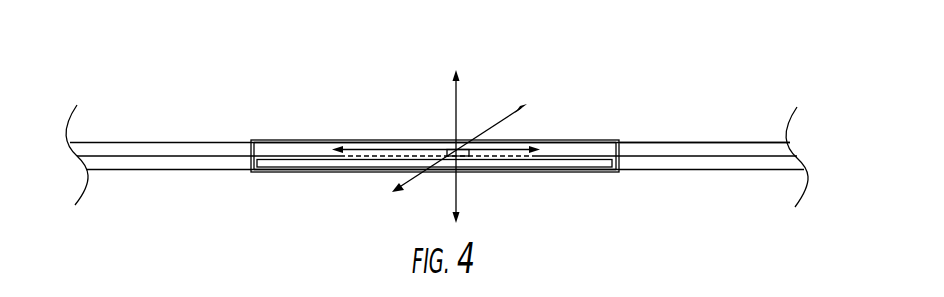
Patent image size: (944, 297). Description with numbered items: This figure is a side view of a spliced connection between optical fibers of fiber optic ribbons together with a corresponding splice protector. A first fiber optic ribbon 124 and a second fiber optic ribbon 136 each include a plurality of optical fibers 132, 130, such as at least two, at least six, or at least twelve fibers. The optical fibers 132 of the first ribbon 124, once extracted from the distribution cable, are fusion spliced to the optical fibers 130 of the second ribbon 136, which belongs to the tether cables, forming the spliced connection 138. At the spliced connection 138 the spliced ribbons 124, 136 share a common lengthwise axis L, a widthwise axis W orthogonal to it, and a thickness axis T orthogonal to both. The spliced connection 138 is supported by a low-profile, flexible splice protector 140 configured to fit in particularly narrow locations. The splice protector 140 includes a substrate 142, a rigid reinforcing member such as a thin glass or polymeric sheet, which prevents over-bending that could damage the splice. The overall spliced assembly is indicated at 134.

The first fiber optic ribbon 124 is at (217, 143).
The optical fibers 130 is at (700, 155).
The optical fibers 132 is at (160, 155).
The sensor assembly 134 is at (378, 70).
The second fiber optic ribbon 136 is at (767, 143).
The spliced connection 138 is at (457, 150).
The splice protector 140 is at (580, 152).
The substrate 142 is at (328, 164).